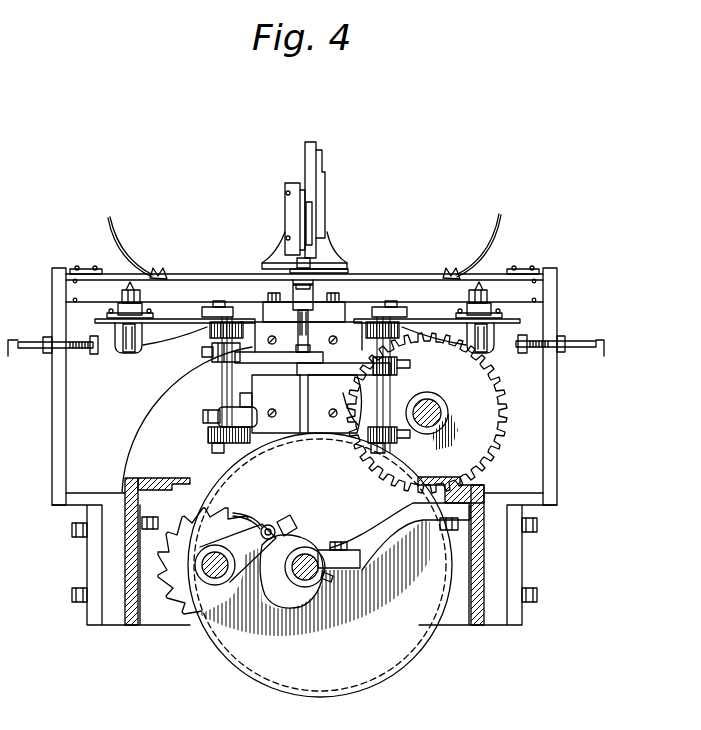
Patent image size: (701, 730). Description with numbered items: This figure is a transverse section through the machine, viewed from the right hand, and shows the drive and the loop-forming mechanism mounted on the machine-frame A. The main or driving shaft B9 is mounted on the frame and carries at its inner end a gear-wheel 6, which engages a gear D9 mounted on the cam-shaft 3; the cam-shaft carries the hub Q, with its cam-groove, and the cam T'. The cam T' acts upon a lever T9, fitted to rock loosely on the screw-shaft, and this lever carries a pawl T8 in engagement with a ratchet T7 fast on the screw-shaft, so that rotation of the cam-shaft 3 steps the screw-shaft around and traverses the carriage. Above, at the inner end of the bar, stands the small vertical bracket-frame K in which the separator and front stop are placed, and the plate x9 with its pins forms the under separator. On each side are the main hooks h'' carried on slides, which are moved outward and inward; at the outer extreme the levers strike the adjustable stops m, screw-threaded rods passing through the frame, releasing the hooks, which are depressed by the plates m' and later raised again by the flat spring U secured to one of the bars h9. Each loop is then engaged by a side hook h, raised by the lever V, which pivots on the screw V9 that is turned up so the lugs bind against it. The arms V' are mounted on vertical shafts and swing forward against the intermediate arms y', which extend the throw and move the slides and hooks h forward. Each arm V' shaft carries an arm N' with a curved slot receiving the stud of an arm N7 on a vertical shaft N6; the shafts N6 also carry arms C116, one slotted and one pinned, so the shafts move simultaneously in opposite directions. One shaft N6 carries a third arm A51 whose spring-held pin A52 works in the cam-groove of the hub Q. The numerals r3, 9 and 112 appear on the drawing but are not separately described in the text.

The vertical bracket-frame K is at (297, 188).
The flat spring U is at (118, 250).
The main hook h'' is at (305, 259).
The plate m' is at (304, 261).
The side hook h is at (304, 297).
The bar h9 is at (304, 288).
The adjustable stop m is at (306, 336).
The arm y' is at (306, 318).
The arm V' is at (304, 337).
The screw V9 is at (114, 345).
The lever V is at (305, 346).
The arm r3 is at (144, 341).
The arm N7 is at (202, 312).
The arm N' is at (304, 309).
The central post 9 is at (294, 303).
The plate x9 is at (311, 264).
The arm C116 is at (273, 357).
The block 112 is at (301, 363).
The vertical shaft N6 is at (220, 382).
The pin A52 is at (253, 403).
The third arm A51 is at (208, 413).
The main or driving shaft B9 is at (438, 421).
The gear-wheel 6 is at (427, 413).
The pawl T8 is at (257, 521).
The lever T9 is at (295, 526).
The ratchet T7 is at (203, 561).
The cam T' is at (258, 572).
The cam-shaft 3 is at (299, 576).
The hub Q is at (320, 565).
The gear D9 is at (276, 686).
The machine-frame A is at (132, 627).